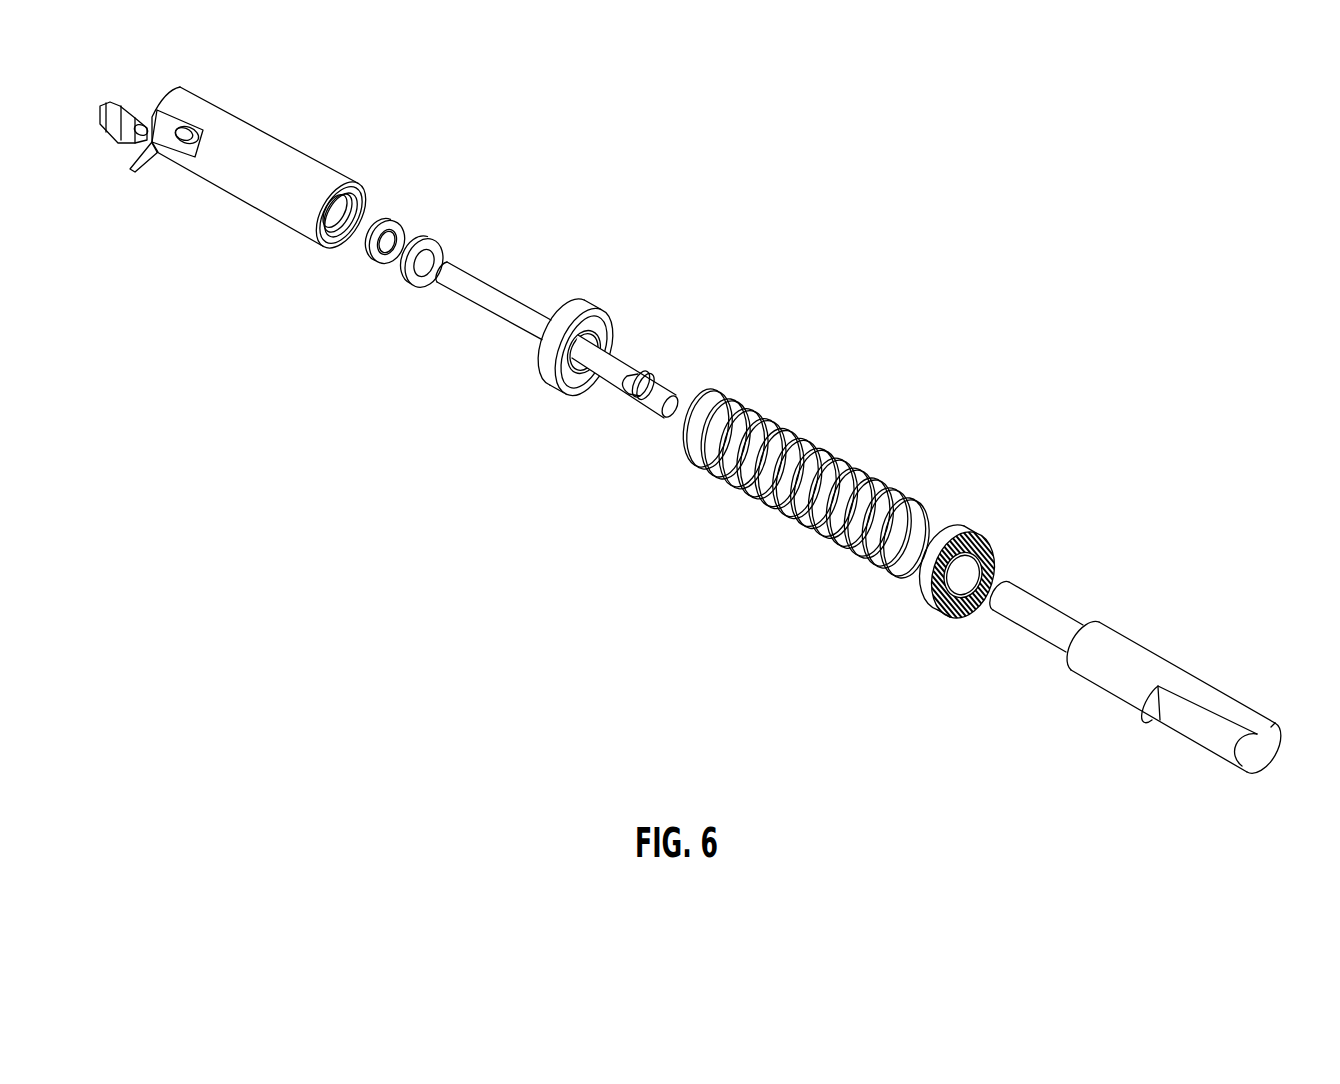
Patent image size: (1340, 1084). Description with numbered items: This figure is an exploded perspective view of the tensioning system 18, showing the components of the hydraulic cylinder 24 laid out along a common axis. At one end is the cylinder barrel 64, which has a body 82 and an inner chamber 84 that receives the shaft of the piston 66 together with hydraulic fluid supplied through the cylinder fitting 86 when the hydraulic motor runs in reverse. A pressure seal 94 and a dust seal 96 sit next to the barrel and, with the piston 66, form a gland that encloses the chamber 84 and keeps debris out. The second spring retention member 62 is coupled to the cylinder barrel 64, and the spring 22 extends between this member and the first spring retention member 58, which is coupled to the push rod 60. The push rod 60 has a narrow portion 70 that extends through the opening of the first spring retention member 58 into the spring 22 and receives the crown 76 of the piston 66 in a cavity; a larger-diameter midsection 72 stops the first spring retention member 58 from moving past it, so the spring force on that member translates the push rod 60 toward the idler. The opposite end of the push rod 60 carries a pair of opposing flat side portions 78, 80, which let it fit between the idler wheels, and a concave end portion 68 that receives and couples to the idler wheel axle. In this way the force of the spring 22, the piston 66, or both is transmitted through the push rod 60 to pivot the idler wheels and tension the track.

The tensioning system 18 is at (993, 386).
The spring 22 is at (838, 460).
The hydraulic cylinder 24 is at (240, 207).
The first spring retention member 58 is at (955, 542).
The push rod 60 is at (1128, 662).
The second spring retention member 62 is at (577, 320).
The cylinder barrel 64 is at (225, 110).
The piston 66 is at (493, 305).
The concave end portion 68 is at (1252, 750).
The narrow portion 70 is at (1017, 603).
The midsection 72 is at (1087, 625).
The crown 76 is at (660, 390).
The flat side portion 78 is at (1197, 723).
The flat side portion 80 is at (1240, 700).
The body 82 is at (307, 173).
The inner chamber 84 is at (368, 199).
The cylinder fitting 86 is at (110, 130).
The pressure seal 94 is at (372, 262).
The dust seal 96 is at (410, 290).